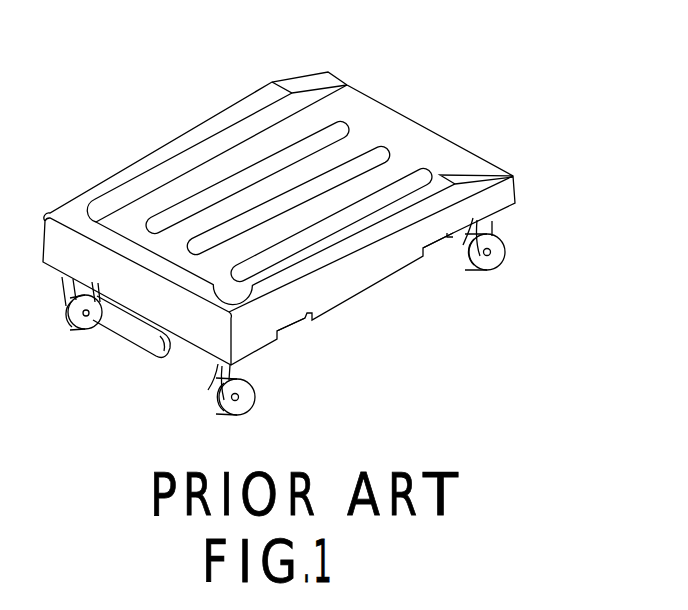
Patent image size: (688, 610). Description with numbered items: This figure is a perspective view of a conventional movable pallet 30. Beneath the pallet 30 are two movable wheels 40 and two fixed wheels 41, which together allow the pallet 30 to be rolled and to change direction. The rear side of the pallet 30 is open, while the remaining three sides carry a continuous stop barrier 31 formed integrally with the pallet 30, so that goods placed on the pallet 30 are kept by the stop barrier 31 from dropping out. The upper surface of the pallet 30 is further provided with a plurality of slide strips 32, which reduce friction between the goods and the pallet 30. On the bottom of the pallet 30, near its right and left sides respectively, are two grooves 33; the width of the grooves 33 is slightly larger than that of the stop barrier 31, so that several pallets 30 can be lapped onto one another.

The pallet 30 is at (433, 145).
The stop barrier 31 is at (293, 86).
The slide strips 32 is at (334, 127).
The grooves 33 is at (434, 243).
The movable wheels 40 is at (505, 255).
The fixed wheels 41 is at (214, 408).